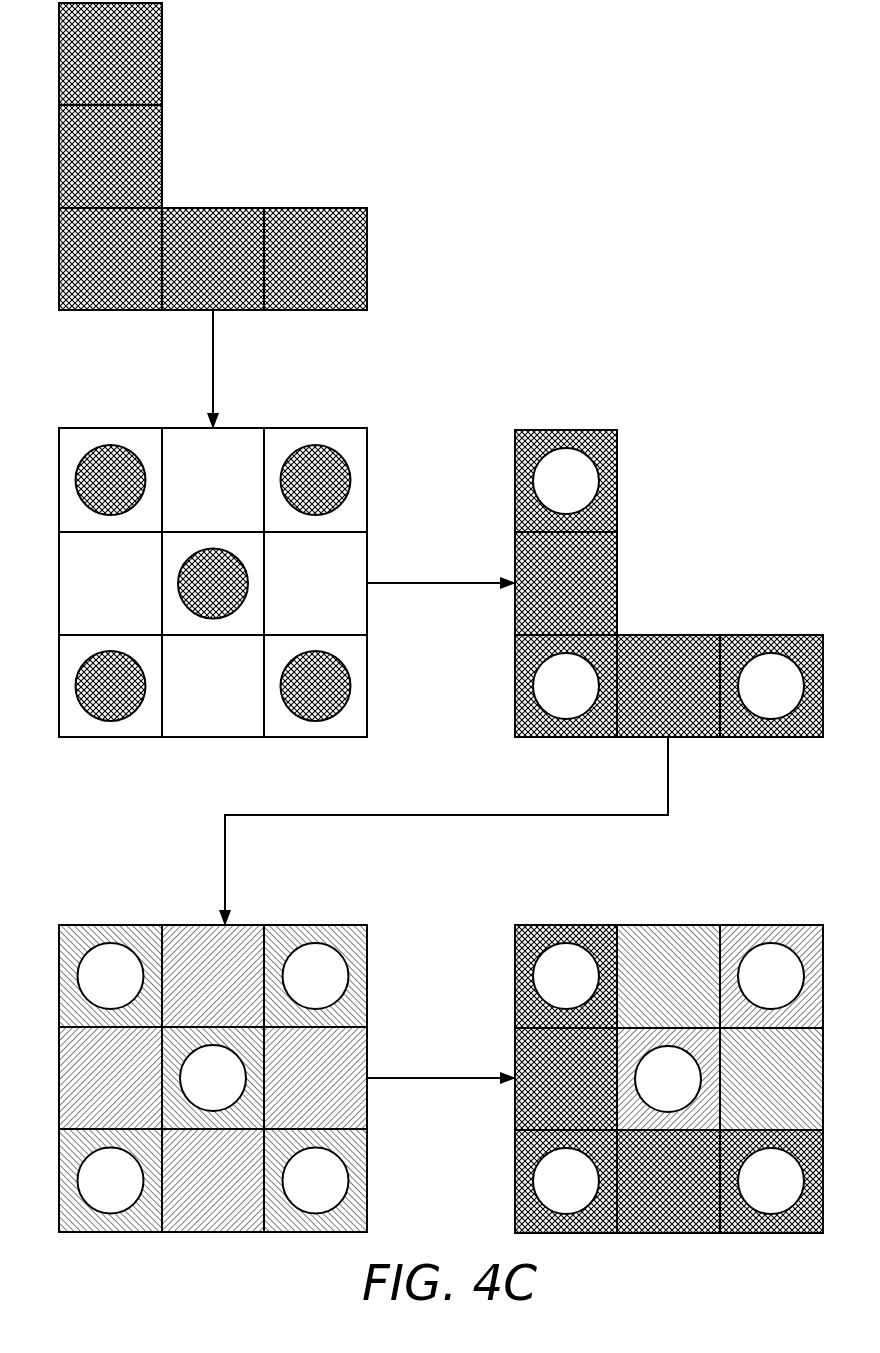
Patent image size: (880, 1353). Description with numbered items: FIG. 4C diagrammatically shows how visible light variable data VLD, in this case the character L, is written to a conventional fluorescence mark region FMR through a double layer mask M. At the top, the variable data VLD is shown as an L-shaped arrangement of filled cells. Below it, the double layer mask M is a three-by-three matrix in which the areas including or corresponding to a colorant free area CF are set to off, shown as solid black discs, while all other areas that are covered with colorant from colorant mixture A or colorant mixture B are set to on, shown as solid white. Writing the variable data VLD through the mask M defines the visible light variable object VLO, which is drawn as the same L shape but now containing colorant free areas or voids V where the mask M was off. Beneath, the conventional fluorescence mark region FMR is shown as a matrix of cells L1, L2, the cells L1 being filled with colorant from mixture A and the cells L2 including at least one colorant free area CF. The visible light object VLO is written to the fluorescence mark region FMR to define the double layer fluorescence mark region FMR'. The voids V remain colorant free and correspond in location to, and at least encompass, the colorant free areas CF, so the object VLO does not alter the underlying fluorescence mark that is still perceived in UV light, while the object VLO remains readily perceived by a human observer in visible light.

The visible light variable data VLD is at (248, 320).
The double layer mask M is at (224, 746).
The visible light variable object VLO is at (669, 611).
The voids V is at (780, 701).
The fluorescence mark region FMR is at (241, 1042).
The double layer fluorescence mark region FMR' is at (669, 1044).
The cells L1 is at (355, 1058).
The cells L2 is at (353, 945).
The colorant free area CF is at (782, 1193).